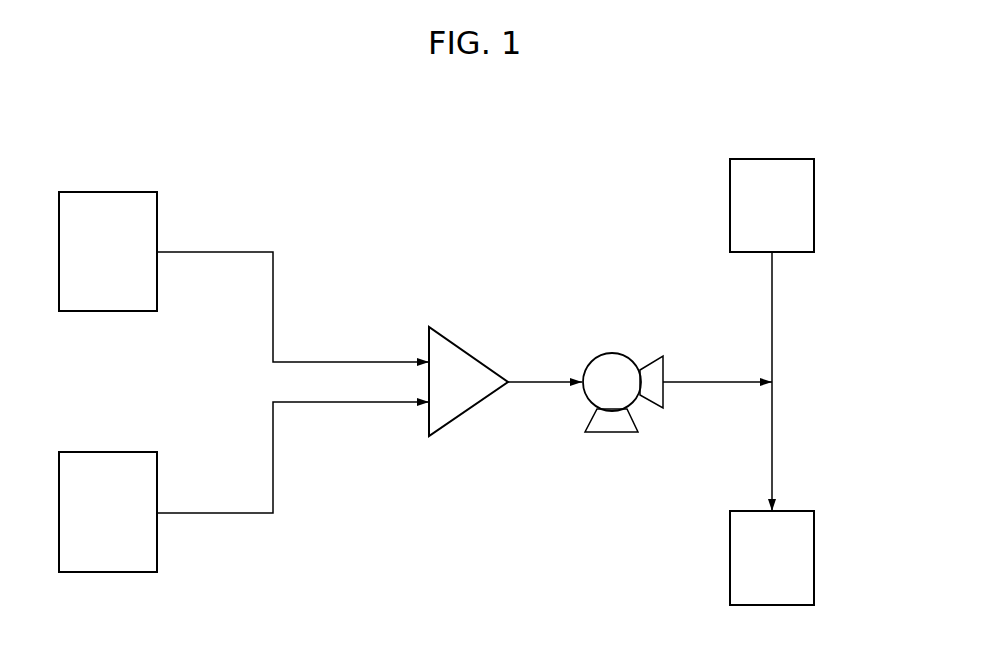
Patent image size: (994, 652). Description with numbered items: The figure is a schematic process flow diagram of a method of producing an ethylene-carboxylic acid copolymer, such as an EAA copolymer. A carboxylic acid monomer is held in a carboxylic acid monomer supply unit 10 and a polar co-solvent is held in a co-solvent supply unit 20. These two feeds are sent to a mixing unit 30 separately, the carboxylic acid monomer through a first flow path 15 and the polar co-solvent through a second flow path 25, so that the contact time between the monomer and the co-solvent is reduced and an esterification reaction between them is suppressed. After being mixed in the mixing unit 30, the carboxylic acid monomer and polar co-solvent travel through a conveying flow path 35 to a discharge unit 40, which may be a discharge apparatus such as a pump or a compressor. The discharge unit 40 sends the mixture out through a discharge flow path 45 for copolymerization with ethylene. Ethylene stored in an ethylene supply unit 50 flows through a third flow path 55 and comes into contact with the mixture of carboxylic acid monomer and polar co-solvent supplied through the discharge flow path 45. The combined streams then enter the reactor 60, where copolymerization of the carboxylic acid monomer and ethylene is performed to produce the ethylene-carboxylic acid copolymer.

The carboxylic acid monomer supply unit 10 is at (102, 192).
The first flow path 15 is at (275, 278).
The co-solvent supply unit 20 is at (102, 452).
The second flow path 25 is at (275, 473).
The mixing unit 30 is at (468, 350).
The conveying flow path 35 is at (535, 380).
The discharge unit 40 is at (613, 353).
The discharge flow path 45 is at (697, 380).
The ethylene supply unit 50 is at (815, 206).
The third flow path 55 is at (775, 328).
The reactor 60 is at (815, 557).